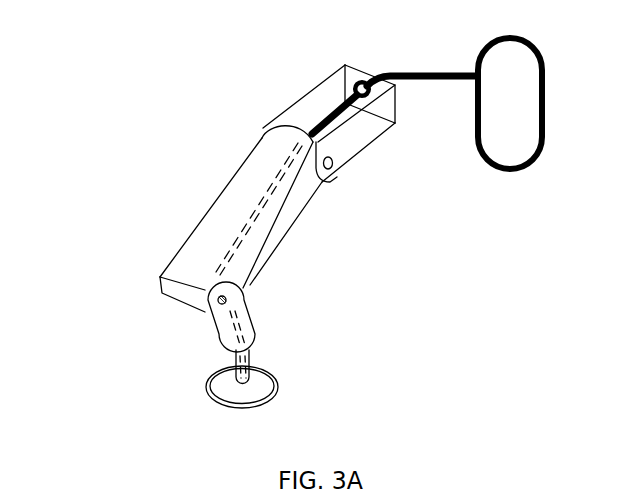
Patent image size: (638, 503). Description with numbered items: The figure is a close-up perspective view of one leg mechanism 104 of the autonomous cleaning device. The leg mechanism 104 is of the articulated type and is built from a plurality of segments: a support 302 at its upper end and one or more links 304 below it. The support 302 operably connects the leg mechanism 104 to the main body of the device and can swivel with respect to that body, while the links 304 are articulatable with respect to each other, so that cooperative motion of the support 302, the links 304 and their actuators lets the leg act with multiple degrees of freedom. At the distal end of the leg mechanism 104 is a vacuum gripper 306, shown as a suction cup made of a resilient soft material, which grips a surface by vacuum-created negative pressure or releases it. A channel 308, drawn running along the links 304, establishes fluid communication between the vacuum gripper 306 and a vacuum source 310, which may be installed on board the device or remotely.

The leg mechanism 104 is at (147, 112).
The support 302 is at (307, 95).
The link 304 is at (197, 245).
The vacuum gripper 306 is at (288, 388).
The channel 308 is at (257, 207).
The vacuum source 310 is at (482, 165).